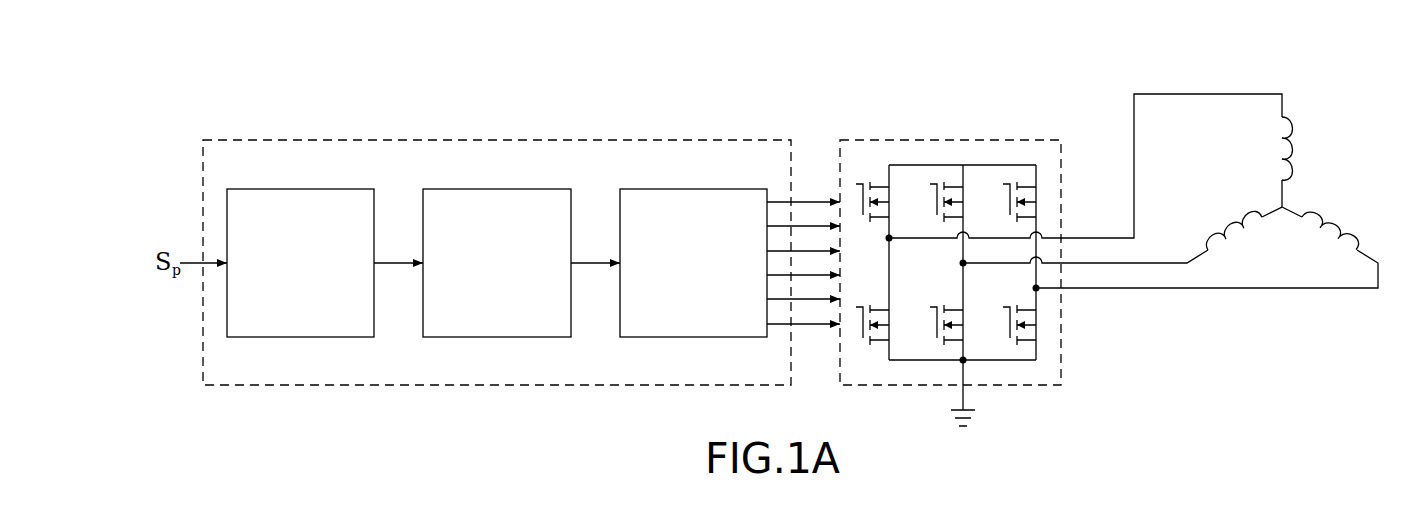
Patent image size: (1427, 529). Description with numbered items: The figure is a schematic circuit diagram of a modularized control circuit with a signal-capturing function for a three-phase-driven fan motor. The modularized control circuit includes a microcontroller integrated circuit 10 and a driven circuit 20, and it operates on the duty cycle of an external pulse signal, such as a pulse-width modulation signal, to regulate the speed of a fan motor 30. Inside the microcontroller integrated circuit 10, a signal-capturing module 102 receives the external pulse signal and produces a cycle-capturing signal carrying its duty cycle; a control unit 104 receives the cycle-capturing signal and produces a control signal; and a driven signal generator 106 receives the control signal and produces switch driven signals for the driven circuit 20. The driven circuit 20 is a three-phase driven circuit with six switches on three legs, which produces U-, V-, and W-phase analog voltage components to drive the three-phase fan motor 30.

The microcontroller integrated circuit 10 is at (498, 140).
The signal-capturing module 102 is at (301, 189).
The control unit 104 is at (497, 189).
The driven signal generator 106 is at (693, 189).
The driven circuit 20 is at (950, 140).
The fan motor 30 is at (1292, 193).